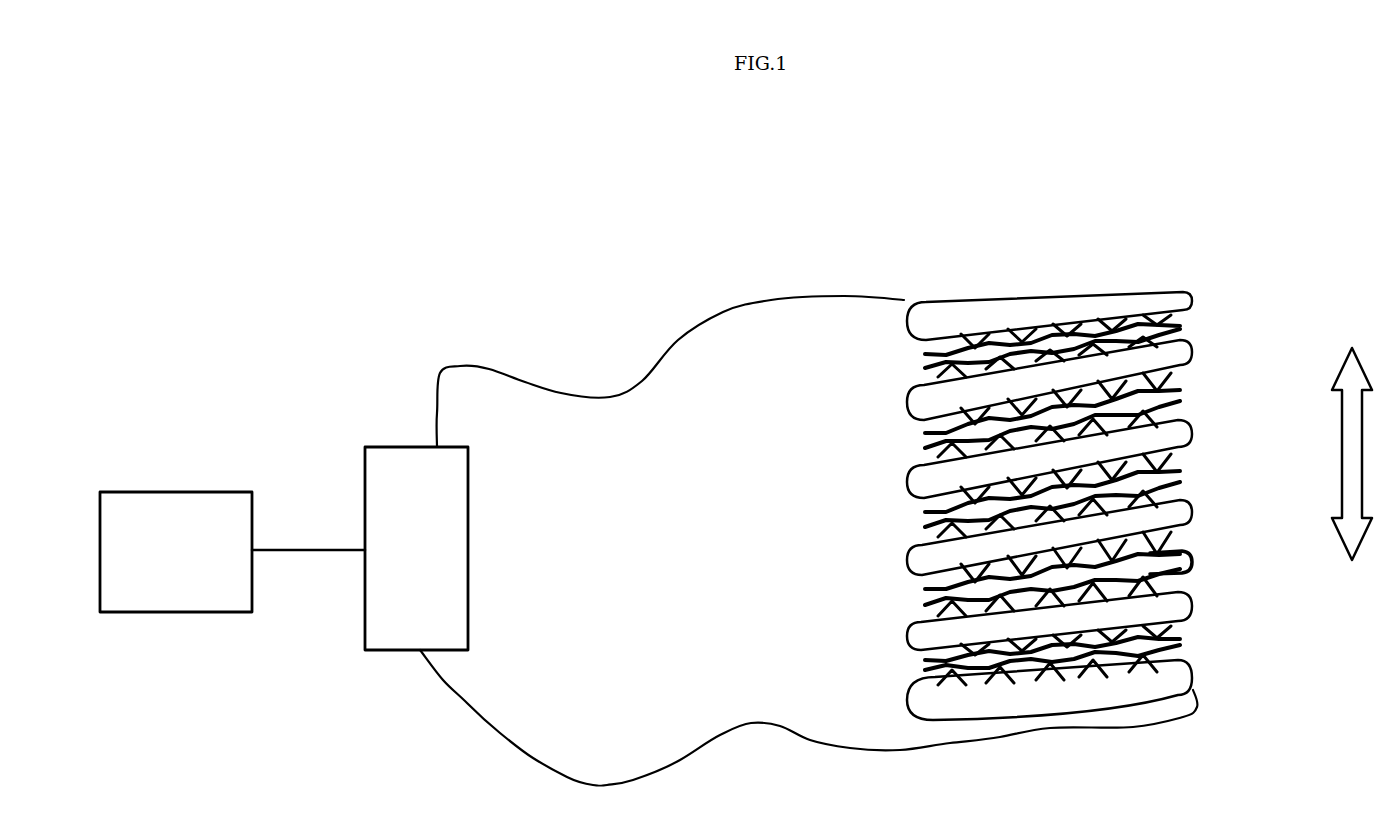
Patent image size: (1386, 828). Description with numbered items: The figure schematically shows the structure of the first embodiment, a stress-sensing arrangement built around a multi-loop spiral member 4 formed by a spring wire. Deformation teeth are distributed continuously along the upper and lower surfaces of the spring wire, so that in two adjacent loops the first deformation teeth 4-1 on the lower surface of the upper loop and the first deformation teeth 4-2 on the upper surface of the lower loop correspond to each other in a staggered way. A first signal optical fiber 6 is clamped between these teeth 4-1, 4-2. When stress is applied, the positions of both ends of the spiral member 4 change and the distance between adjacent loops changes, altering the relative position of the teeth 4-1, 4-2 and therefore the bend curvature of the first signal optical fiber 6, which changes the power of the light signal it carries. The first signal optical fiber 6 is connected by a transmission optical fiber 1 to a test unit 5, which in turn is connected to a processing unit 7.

The transmission optical fiber 1 is at (647, 373).
The spiral member 4 is at (1143, 307).
The first deformation teeth on the lower surface of the spring wire 4-1 is at (1025, 335).
The first deformation teeth on the upper surface of the spring wire 4-2 is at (945, 370).
The test unit 5 is at (402, 470).
The first signal optical fiber 6 is at (1185, 578).
The processing unit 7 is at (177, 508).